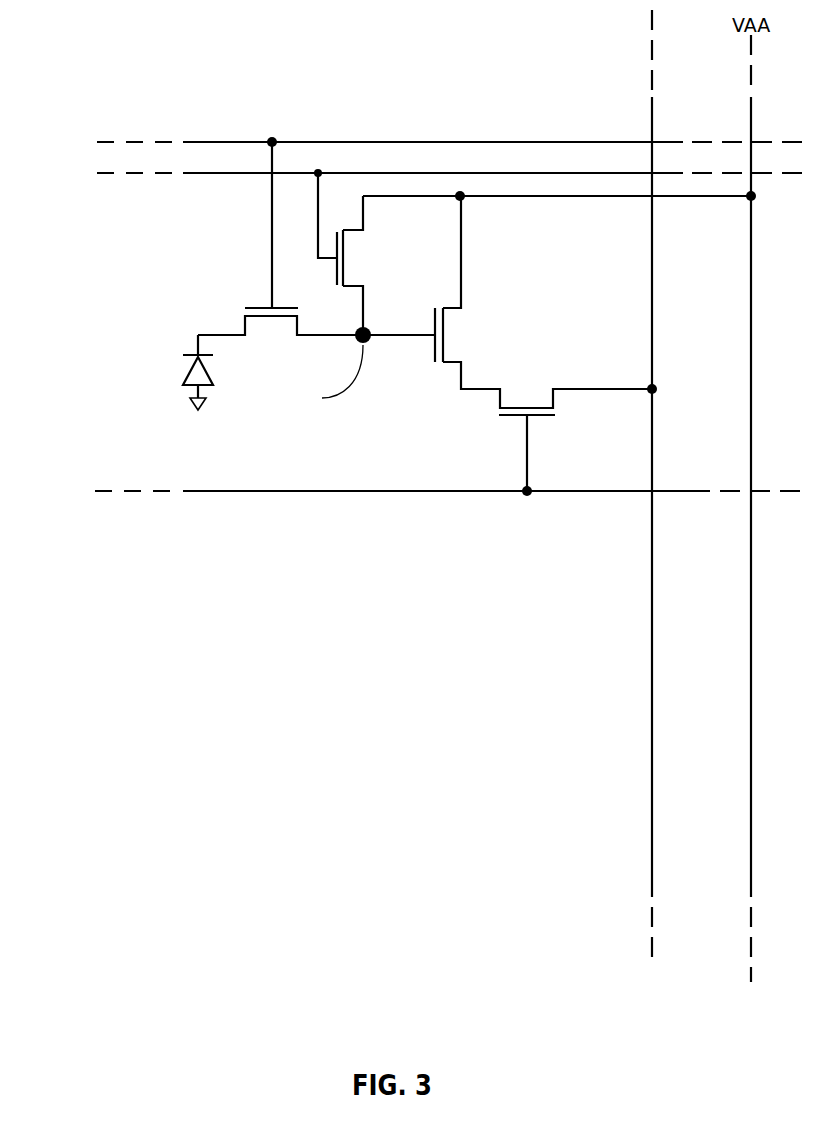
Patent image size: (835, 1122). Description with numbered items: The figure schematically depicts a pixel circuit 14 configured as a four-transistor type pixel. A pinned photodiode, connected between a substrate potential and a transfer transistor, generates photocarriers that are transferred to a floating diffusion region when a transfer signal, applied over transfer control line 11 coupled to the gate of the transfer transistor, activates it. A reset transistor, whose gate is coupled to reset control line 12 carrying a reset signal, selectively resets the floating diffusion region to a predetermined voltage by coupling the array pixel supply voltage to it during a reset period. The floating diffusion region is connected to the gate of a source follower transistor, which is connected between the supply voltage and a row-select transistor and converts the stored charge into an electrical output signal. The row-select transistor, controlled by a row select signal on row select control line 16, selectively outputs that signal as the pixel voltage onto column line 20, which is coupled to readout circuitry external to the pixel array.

The transfer control line 11 is at (248, 142).
The reset control line 12 is at (220, 176).
The pixel circuit 14 is at (160, 560).
The row select control line 16 is at (364, 494).
The column line 20 is at (652, 835).